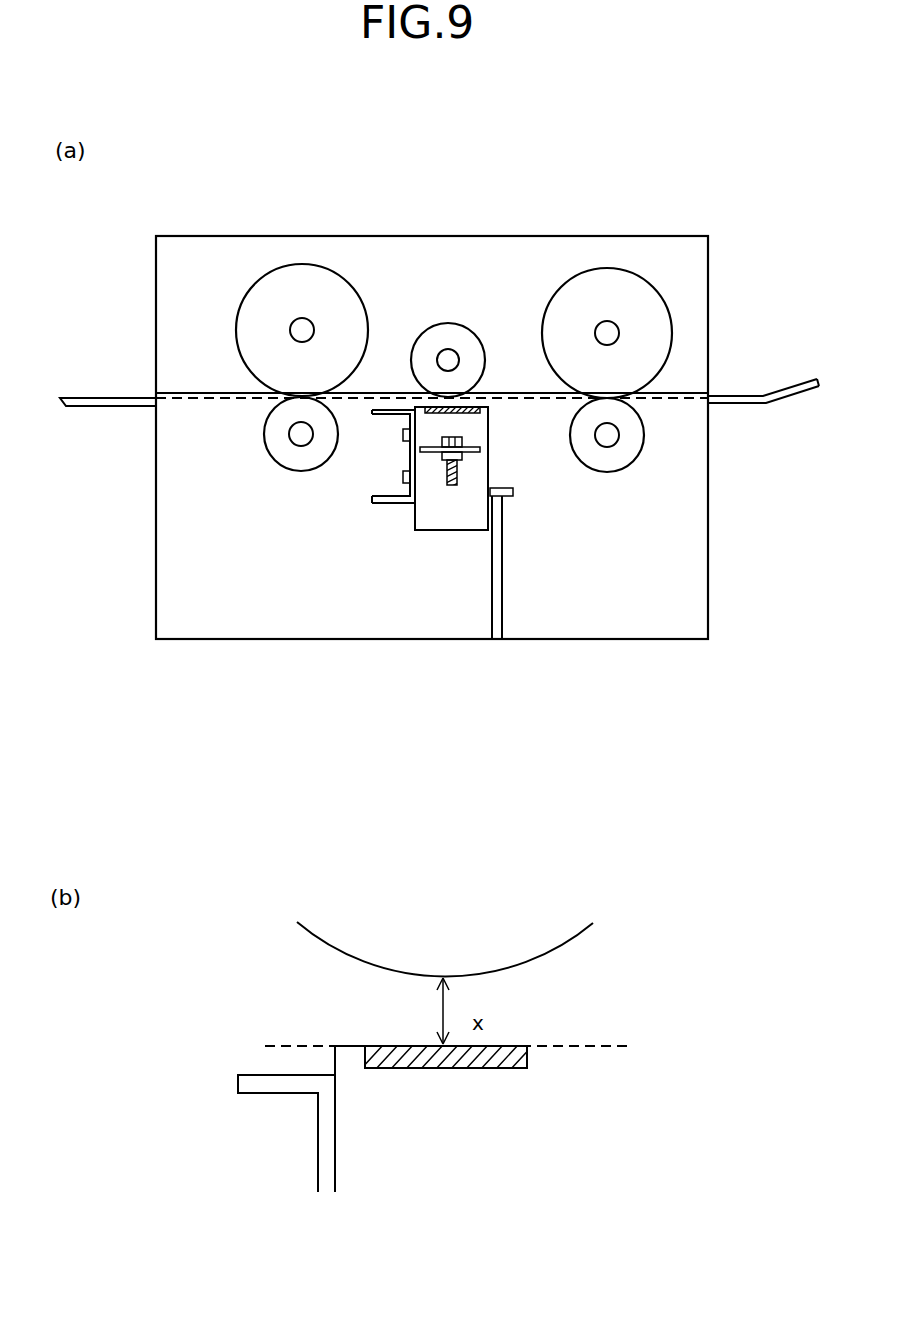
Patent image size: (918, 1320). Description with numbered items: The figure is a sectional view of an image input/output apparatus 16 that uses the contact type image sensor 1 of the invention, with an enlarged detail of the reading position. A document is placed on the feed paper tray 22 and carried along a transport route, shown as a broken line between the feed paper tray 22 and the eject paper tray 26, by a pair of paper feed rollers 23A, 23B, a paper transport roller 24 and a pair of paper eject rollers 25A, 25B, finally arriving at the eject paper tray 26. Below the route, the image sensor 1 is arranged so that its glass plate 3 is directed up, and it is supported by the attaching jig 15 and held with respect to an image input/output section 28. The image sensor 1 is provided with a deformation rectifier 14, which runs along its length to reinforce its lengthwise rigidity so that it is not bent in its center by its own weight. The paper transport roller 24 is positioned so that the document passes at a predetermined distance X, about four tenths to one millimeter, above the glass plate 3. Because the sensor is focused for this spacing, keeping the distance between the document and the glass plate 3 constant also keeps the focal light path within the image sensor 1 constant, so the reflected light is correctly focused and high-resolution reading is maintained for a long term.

The image sensor 1 is at (448, 538).
The glass plate 3 is at (488, 412).
The deformation rectifier 14 is at (372, 505).
The attaching jig 15 is at (480, 449).
The image input/output apparatus 16 is at (535, 236).
The feed paper tray 22 is at (78, 398).
The paper feed roller 23A is at (262, 316).
The paper feed roller 23B is at (290, 454).
The paper transport roller 24 is at (452, 333).
The paper eject roller 25A is at (638, 296).
The paper eject roller 25B is at (622, 458).
The eject paper tray 26 is at (784, 383).
The image input/output section 28 is at (503, 557).